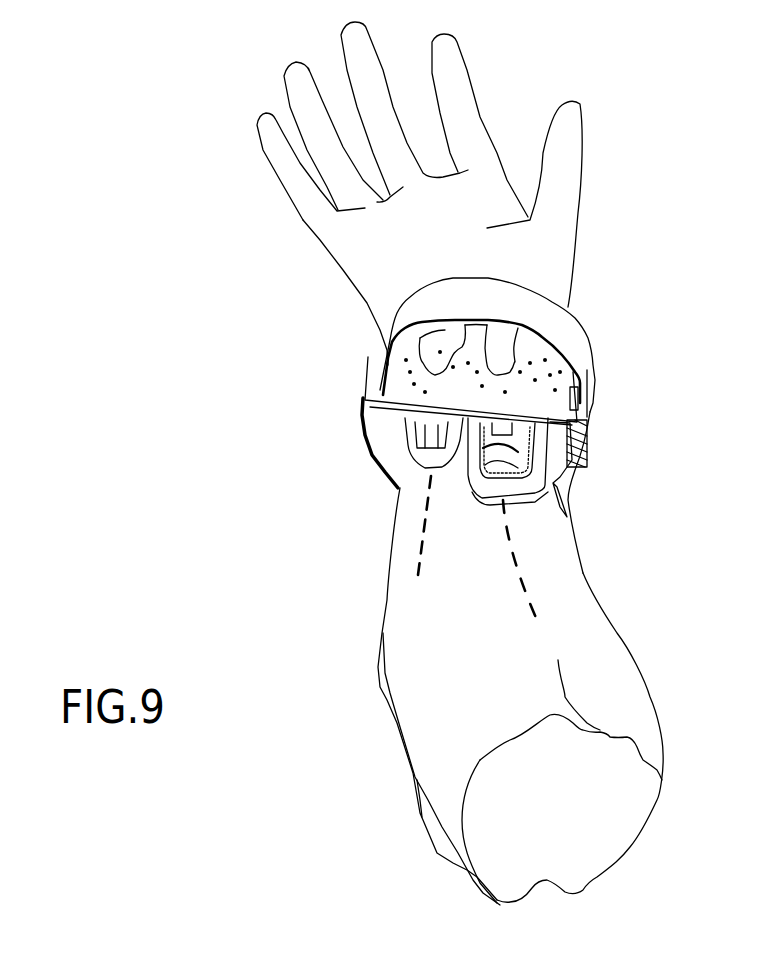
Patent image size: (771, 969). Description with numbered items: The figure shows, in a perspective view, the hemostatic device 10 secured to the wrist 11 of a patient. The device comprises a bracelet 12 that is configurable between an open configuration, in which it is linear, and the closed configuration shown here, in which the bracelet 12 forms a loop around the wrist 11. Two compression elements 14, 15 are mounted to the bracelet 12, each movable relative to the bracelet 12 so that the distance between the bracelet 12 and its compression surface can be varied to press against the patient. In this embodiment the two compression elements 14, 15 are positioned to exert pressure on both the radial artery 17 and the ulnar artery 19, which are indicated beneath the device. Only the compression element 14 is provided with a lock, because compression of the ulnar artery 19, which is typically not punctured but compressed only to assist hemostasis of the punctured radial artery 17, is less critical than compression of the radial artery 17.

The hemostatic device 10 is at (433, 565).
The wrist 11 is at (425, 472).
The bracelet 12 is at (578, 316).
The compression element 14 is at (545, 483).
The compression element 15 is at (407, 457).
The radial artery 17 is at (510, 542).
The ulnar artery 19 is at (423, 537).